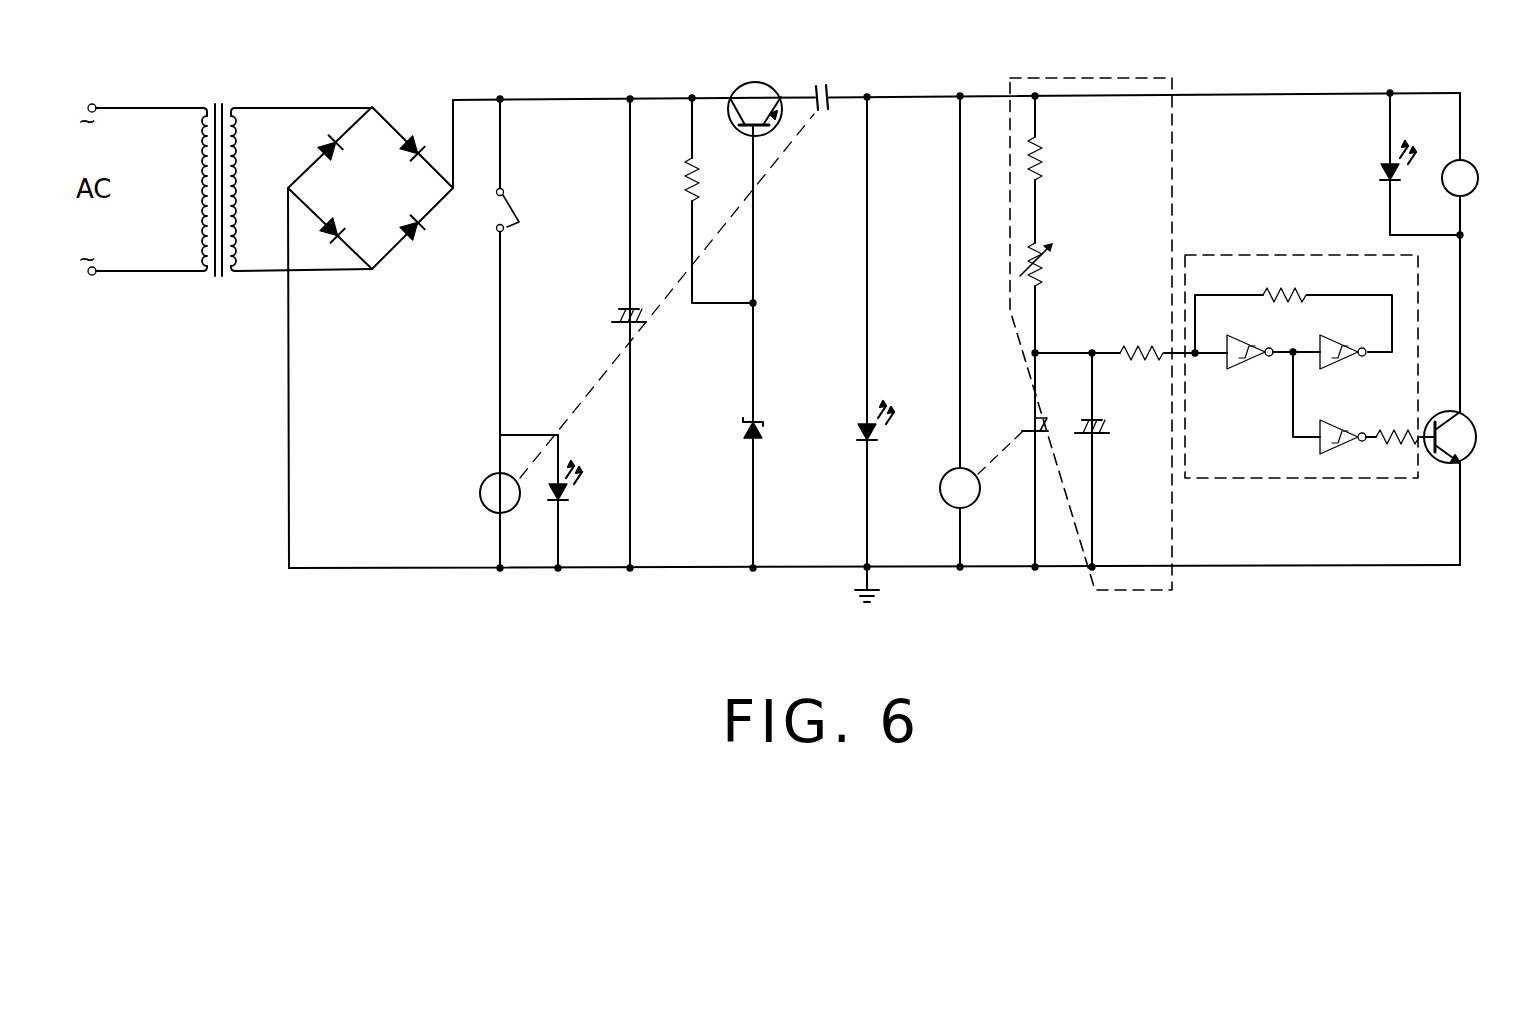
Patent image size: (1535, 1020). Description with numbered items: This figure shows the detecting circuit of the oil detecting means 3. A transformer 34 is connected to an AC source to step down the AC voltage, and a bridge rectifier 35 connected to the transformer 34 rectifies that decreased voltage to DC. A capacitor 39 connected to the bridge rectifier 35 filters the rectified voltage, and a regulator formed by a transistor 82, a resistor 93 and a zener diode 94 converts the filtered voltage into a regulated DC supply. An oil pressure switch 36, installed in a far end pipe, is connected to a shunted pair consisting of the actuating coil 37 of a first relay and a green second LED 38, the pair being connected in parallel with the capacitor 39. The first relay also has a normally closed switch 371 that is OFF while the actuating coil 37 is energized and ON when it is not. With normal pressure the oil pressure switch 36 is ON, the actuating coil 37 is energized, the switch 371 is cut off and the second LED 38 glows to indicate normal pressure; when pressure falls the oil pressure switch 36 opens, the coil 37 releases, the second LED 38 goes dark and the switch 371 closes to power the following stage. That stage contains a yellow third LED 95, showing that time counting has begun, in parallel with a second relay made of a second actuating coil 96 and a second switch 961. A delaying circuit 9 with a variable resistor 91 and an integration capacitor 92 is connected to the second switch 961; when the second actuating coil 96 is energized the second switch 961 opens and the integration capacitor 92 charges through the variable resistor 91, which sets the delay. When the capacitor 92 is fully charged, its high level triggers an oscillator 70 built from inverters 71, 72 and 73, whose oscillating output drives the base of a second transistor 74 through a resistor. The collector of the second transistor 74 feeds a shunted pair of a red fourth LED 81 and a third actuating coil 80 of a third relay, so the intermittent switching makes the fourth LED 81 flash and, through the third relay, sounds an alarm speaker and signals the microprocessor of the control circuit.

The oil detecting means 3 is at (563, 60).
The delaying circuit 9 is at (1104, 78).
The transformer 34 is at (218, 98).
The bridge rectifier 35 is at (378, 124).
The oil pressure switch 36 is at (500, 226).
The actuating coil 37 is at (480, 478).
The second LED 38 is at (570, 492).
The capacitor 39 is at (638, 325).
The oscillator 70 is at (1310, 338).
The inverter 71 is at (1247, 341).
The inverter 72 is at (1338, 341).
The inverter 73 is at (1338, 426).
The second transistor 74 is at (1472, 432).
The third actuating coil 80 is at (1470, 164).
The fourth LED 81 is at (1384, 162).
The transistor 82 is at (762, 94).
The variable resistor 91 is at (1040, 230).
The integration capacitor 92 is at (1098, 440).
The resistor 93 is at (694, 188).
The zener diode 94 is at (758, 420).
The third LED 95 is at (872, 387).
The second actuating coil 96 is at (948, 501).
The second switch 961 is at (1030, 420).
The switch 371 is at (822, 94).